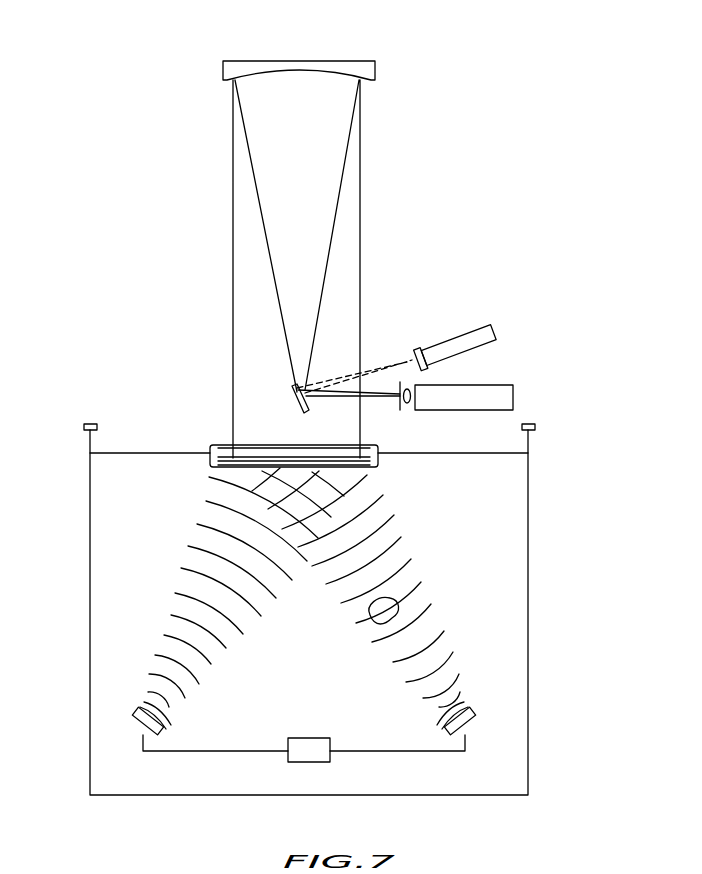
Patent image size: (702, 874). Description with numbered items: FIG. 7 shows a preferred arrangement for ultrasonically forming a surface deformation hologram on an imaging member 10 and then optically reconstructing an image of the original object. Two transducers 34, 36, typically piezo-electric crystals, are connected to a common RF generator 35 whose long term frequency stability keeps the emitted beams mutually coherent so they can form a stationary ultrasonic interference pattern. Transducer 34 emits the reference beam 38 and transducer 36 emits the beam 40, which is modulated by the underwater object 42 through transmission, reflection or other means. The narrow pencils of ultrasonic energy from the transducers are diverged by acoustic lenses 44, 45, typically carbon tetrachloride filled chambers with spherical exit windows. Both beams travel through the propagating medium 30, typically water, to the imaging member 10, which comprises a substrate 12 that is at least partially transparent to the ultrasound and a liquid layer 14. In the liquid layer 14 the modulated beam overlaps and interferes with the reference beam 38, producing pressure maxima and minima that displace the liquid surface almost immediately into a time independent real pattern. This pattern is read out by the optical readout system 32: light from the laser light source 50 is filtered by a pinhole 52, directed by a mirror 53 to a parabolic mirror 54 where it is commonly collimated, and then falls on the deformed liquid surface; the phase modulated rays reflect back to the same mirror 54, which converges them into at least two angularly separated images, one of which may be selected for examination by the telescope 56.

The imaging member 10 is at (388, 446).
The substrate 12 is at (372, 462).
The liquid layer 14 is at (243, 452).
The propagating medium 30 is at (308, 690).
The optical readout system 32 is at (380, 294).
The transducer 34 is at (132, 721).
The RF generator 35 is at (309, 750).
The transducer 36 is at (478, 730).
The reference beam 38 is at (203, 583).
The modulated beam 40 is at (400, 540).
The underwater object 42 is at (400, 597).
The acoustic lens 44 is at (173, 719).
The acoustic lens 45 is at (473, 707).
The laser light source 50 is at (513, 397).
The pinhole 52 is at (400, 410).
The mirror 53 is at (291, 401).
The parabolic mirror 54 is at (376, 70).
The telescope 56 is at (497, 333).